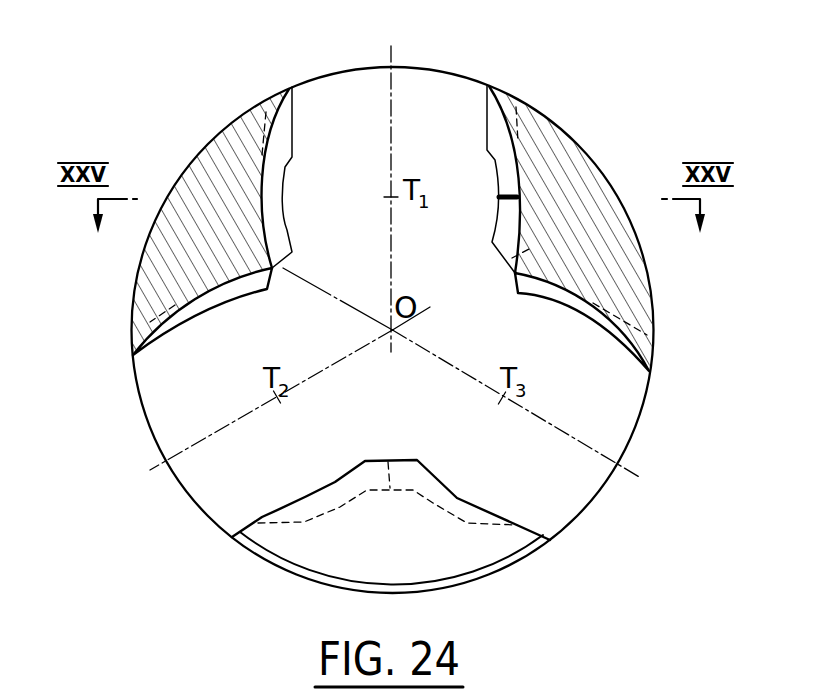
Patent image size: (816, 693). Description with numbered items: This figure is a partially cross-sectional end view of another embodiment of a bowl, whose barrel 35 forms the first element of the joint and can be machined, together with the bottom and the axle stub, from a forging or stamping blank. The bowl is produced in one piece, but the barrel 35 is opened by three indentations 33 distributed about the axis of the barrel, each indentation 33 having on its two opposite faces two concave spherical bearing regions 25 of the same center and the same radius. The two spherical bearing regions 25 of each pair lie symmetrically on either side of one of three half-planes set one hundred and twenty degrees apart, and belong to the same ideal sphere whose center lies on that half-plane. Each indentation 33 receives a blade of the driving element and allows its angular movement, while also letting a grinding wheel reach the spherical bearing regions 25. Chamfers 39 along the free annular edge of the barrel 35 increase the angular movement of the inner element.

The spherical bearing region 25 is at (510, 197).
The indentation 33 is at (488, 100).
The barrel 35 is at (567, 218).
The chamfer 39 is at (245, 260).